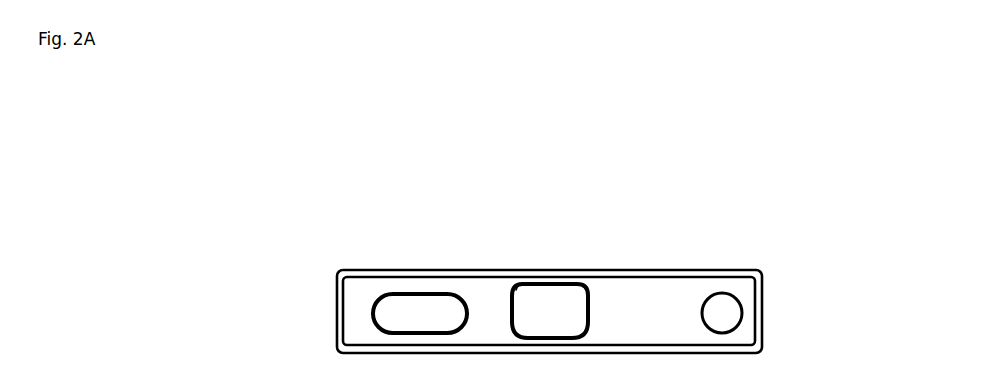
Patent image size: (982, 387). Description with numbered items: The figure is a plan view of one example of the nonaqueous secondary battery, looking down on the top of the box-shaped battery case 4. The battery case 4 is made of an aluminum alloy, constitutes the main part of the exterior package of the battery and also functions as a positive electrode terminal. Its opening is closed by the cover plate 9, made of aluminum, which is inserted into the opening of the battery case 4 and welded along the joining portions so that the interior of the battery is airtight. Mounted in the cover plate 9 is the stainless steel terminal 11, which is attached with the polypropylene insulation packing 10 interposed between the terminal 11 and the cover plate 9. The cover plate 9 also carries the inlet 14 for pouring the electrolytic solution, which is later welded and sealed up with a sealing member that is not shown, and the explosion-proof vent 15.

The battery case 4 is at (765, 293).
The cover plate 9 is at (667, 292).
The insulation packing 10 is at (583, 281).
The terminal 11 is at (542, 302).
The inlet 14 is at (727, 300).
The explosion-proof vent 15 is at (420, 305).